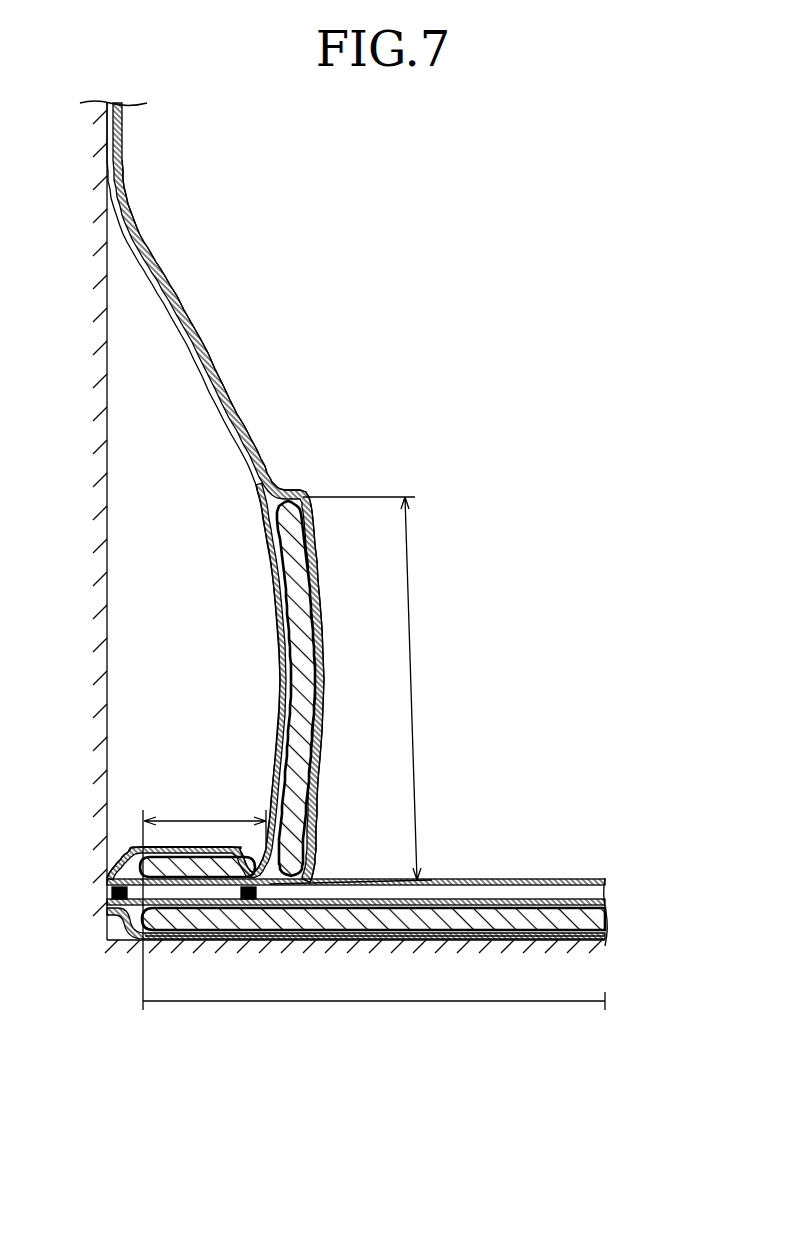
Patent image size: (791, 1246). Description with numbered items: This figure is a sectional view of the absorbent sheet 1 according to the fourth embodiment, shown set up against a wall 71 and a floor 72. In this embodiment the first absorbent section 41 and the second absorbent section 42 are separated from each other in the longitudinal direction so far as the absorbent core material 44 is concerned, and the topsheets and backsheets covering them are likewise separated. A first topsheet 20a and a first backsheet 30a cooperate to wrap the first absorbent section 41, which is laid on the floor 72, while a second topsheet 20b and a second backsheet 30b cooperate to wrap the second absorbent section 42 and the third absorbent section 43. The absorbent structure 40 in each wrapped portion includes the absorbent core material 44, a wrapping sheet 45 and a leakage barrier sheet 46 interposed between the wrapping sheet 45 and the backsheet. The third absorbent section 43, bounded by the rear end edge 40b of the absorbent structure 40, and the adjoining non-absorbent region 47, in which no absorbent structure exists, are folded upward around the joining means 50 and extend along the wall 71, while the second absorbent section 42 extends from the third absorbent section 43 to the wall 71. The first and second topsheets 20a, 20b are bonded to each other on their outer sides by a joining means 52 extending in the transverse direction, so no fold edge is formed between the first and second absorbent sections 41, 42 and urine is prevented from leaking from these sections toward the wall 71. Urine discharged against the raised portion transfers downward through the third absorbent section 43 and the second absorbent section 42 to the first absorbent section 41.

The absorbent sheet 1 is at (270, 264).
The first topsheet 20a is at (582, 900).
The second topsheet 20b is at (162, 290).
The first backsheet 30a is at (582, 940).
The second backsheet 30b is at (158, 300).
The absorbent structure 40 is at (325, 709).
The rear end edge of the absorbent structure 40b is at (282, 490).
The first absorbent section 41 is at (423, 1002).
The second absorbent section 42 is at (205, 820).
The third absorbent section 43 is at (413, 688).
The absorbent core material 44 is at (303, 652).
The wrapping sheet 45 is at (320, 683).
The leakage barrier sheet 46 is at (272, 523).
The non-absorbent region 47 is at (212, 352).
The joining means 50 is at (247, 900).
The joining means 52 is at (112, 893).
The wall 71 is at (107, 490).
The floor 72 is at (378, 925).